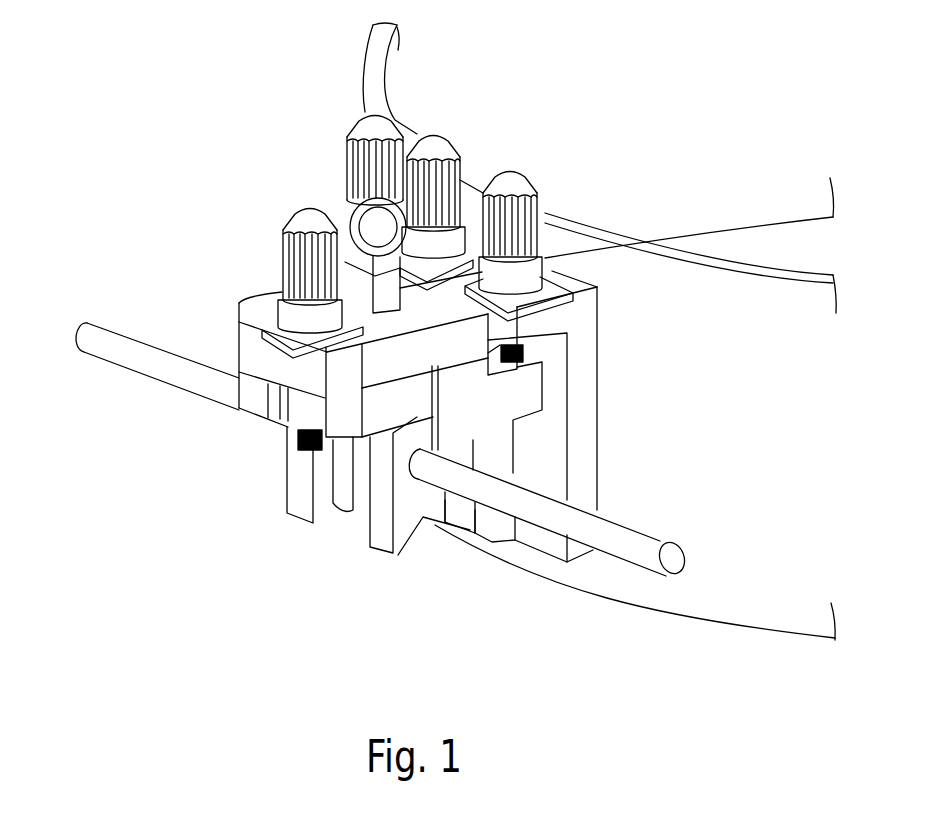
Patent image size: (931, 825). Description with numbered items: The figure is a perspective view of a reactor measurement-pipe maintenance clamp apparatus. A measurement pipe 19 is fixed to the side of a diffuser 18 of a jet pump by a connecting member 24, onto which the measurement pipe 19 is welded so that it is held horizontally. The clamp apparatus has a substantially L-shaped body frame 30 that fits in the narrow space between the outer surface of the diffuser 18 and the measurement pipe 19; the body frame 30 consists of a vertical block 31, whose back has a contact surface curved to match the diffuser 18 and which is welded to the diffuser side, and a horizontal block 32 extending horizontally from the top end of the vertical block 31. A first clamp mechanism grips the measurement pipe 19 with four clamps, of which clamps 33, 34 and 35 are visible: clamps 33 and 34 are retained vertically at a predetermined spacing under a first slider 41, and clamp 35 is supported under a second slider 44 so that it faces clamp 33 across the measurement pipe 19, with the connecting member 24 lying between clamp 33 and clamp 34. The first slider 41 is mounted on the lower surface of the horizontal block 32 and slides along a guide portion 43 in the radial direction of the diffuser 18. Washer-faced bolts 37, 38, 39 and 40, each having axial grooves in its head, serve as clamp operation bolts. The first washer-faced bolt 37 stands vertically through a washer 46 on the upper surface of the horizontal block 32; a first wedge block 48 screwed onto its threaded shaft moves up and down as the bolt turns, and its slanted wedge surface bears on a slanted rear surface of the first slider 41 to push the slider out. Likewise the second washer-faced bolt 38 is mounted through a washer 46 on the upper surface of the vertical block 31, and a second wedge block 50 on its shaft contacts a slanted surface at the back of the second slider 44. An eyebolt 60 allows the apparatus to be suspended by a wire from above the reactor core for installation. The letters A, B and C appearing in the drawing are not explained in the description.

The diffuser 18 is at (513, 562).
The measurement pipe 19 is at (163, 345).
The connecting member 24 is at (347, 510).
The body frame 30 is at (583, 347).
The vertical block 31 is at (580, 443).
The horizontal block 32 is at (423, 318).
The clamp 33 is at (387, 545).
The clamp 34 is at (303, 510).
The clamp 35 is at (465, 518).
The first washer-faced bolt 37 is at (281, 252).
The second washer-faced bolt 38 is at (542, 162).
The washer-faced bolt 39 is at (445, 152).
The washer-faced bolt 40 is at (360, 124).
The first slider 41 is at (238, 408).
The guide portion 43 is at (254, 347).
The second slider 44 is at (455, 433).
The washer 46 is at (261, 297).
The first wedge block 48 is at (296, 428).
The second wedge block 50 is at (527, 383).
The eyebolt 60 is at (343, 198).
The direction arrow A is at (614, 481).
The direction arrow B is at (227, 587).
The direction arrow C is at (186, 209).